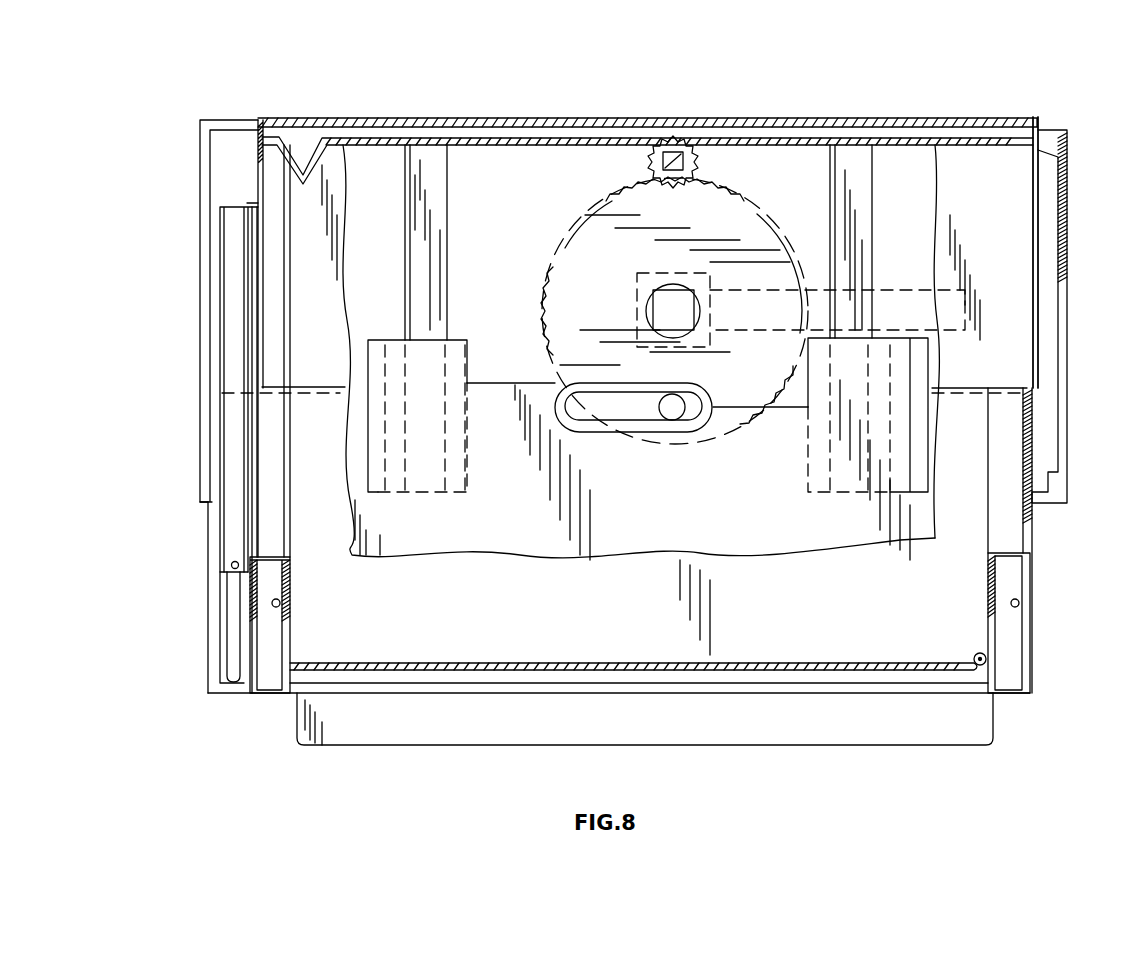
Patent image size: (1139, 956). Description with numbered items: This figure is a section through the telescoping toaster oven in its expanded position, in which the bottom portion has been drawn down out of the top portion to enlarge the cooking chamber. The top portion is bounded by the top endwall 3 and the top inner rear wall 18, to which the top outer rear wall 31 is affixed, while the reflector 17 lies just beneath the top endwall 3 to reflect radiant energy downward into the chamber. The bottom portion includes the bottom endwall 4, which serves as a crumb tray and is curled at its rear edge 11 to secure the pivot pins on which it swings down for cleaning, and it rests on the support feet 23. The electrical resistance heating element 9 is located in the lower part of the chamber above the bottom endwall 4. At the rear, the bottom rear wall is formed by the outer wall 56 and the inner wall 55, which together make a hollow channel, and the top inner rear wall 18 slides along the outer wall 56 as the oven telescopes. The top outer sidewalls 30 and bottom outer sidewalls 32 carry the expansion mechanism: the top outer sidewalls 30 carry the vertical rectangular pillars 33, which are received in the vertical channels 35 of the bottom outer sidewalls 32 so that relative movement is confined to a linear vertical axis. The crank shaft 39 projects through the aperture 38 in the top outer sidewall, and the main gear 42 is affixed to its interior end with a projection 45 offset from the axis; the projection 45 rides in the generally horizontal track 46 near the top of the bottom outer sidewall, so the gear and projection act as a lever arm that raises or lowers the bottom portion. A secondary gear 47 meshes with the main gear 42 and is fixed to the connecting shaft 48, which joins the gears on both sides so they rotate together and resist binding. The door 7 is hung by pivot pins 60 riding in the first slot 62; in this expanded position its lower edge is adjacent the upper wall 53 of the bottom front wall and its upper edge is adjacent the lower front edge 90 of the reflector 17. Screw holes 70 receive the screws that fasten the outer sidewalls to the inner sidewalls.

The top endwall 3 is at (413, 118).
The bottom endwall 4 is at (430, 662).
The door 7 is at (220, 512).
The electrical resistance heating element 9 is at (238, 62).
The rear edge 11 is at (978, 654).
The reflector 17 is at (358, 148).
The top inner rear wall 18 is at (1033, 200).
The support feet 23 is at (470, 746).
The top outer sidewalls 30 is at (200, 154).
The top outer rear wall 31 is at (1067, 212).
The bottom outer sidewalls 32 is at (207, 660).
The pillars 33 is at (450, 188).
The channels 35 is at (448, 338).
The aperture 38 is at (647, 313).
The crank shaft 39 is at (673, 290).
The main gear 42 is at (712, 181).
The projection 45 is at (673, 422).
The track 46 is at (590, 425).
The secondary gear 47 is at (700, 164).
The connecting shaft 48 is at (648, 165).
The upper wall 53 is at (275, 557).
The inner wall 55 is at (988, 580).
The outer wall 56 is at (1023, 437).
The pivot pins 60 is at (231, 567).
The first slot 62 is at (234, 604).
The screw holes 70 is at (283, 607).
The lower front edge 90 is at (247, 205).